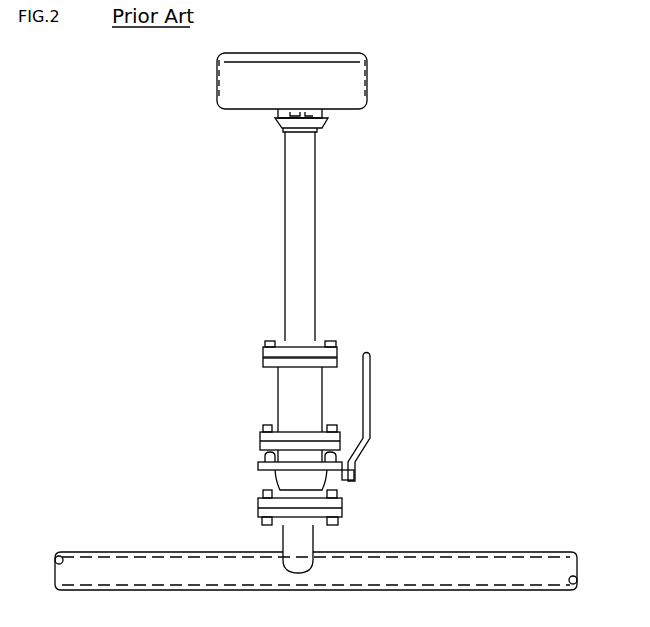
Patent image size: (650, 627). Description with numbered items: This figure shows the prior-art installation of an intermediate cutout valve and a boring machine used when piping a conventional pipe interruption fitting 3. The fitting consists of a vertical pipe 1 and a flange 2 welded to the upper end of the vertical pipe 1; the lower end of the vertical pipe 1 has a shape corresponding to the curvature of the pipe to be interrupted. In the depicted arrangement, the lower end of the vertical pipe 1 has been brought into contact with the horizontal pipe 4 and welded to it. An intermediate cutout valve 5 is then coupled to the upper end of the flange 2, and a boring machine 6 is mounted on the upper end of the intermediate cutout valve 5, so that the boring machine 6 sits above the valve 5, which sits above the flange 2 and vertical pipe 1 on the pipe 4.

The vertical pipe 1 is at (297, 541).
The flange 2 is at (262, 510).
The pipe interruption fitting 3 is at (197, 481).
The pipe 4 is at (155, 567).
The intermediate cutout valve 5 is at (285, 480).
The boring machine 6 is at (308, 256).